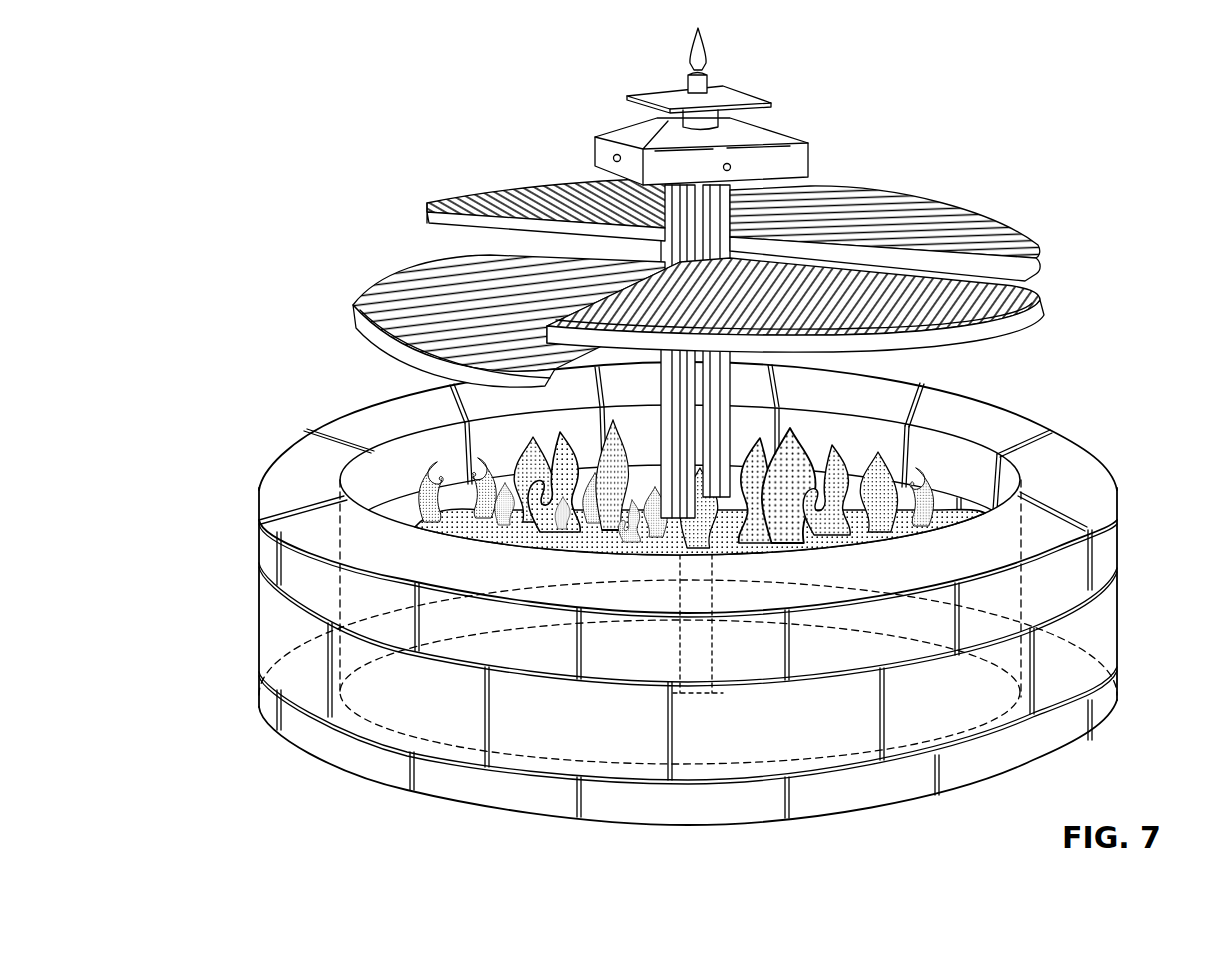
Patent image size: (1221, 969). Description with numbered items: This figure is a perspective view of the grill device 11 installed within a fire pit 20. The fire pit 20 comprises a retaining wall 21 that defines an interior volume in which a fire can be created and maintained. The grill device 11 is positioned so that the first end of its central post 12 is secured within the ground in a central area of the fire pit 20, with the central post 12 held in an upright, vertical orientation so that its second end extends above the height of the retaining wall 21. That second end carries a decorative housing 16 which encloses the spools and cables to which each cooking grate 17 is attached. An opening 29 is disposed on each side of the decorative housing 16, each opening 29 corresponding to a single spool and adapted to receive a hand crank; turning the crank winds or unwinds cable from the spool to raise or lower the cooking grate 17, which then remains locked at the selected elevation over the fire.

The grill device 11 is at (686, 273).
The central post 12 is at (706, 193).
The decorative housing 16 is at (744, 137).
The cooking grate 17 is at (982, 206).
The fire pit 20 is at (654, 593).
The retaining wall 21 is at (1092, 631).
The opening 29 is at (617, 154).